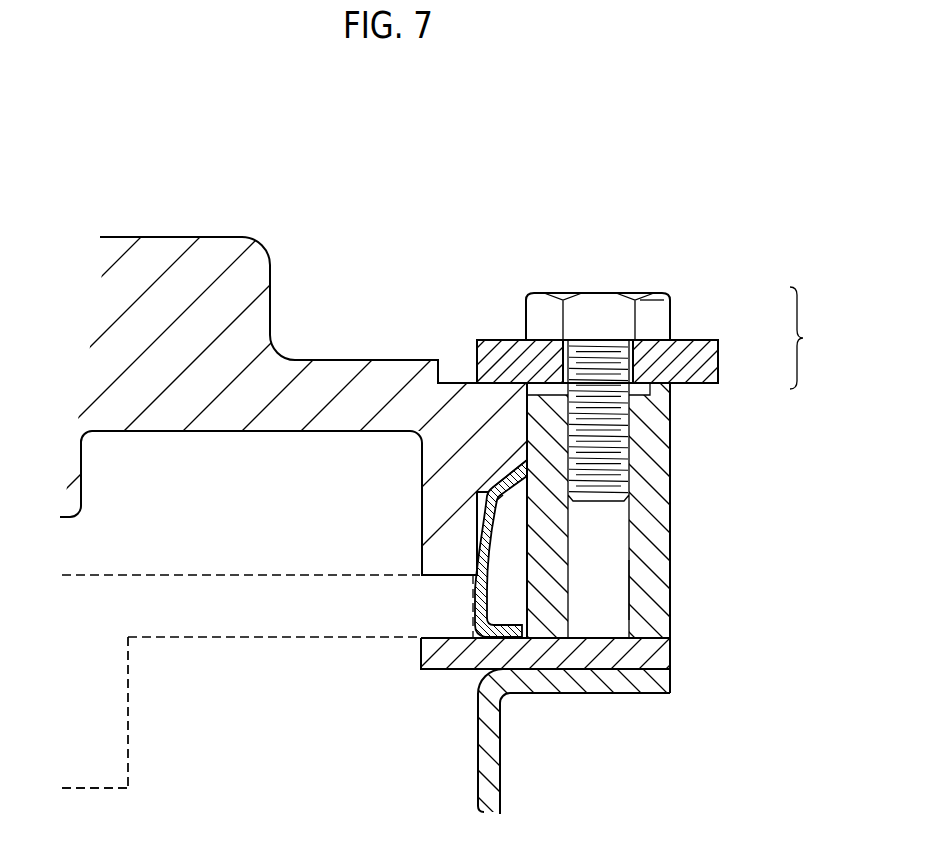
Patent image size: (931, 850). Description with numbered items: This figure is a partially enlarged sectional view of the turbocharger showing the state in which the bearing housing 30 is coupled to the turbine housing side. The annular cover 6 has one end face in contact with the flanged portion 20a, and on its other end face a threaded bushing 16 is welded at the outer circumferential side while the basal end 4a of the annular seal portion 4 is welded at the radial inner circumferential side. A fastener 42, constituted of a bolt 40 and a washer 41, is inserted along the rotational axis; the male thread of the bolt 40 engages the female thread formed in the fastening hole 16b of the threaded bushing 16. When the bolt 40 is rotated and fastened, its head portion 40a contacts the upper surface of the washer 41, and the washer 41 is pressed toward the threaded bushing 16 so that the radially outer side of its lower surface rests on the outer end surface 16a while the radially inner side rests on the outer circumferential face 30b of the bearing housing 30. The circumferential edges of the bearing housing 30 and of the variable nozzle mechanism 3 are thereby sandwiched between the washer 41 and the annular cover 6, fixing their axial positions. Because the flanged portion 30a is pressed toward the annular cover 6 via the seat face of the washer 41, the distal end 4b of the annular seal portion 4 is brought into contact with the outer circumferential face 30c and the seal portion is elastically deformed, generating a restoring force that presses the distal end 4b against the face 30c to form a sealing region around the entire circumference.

The variable nozzle mechanism 3 is at (128, 715).
The annular seal portion 4 is at (463, 535).
The basal end 4a is at (477, 624).
The distal end 4b is at (505, 470).
The annular cover 6 is at (662, 656).
The threaded bushing 16 is at (665, 515).
The outer end surface 16a is at (663, 376).
The fastening hole 16b is at (613, 592).
The flanged portion 20a is at (662, 683).
The bearing housing 30 is at (212, 237).
The flanged portion 30a is at (458, 425).
The outer circumferential face 30b is at (497, 378).
The outer circumferential face 30c is at (500, 512).
The bolt 40 is at (672, 308).
The head portion 40a is at (655, 302).
The washer 41 is at (705, 359).
The fastener 42 is at (813, 338).